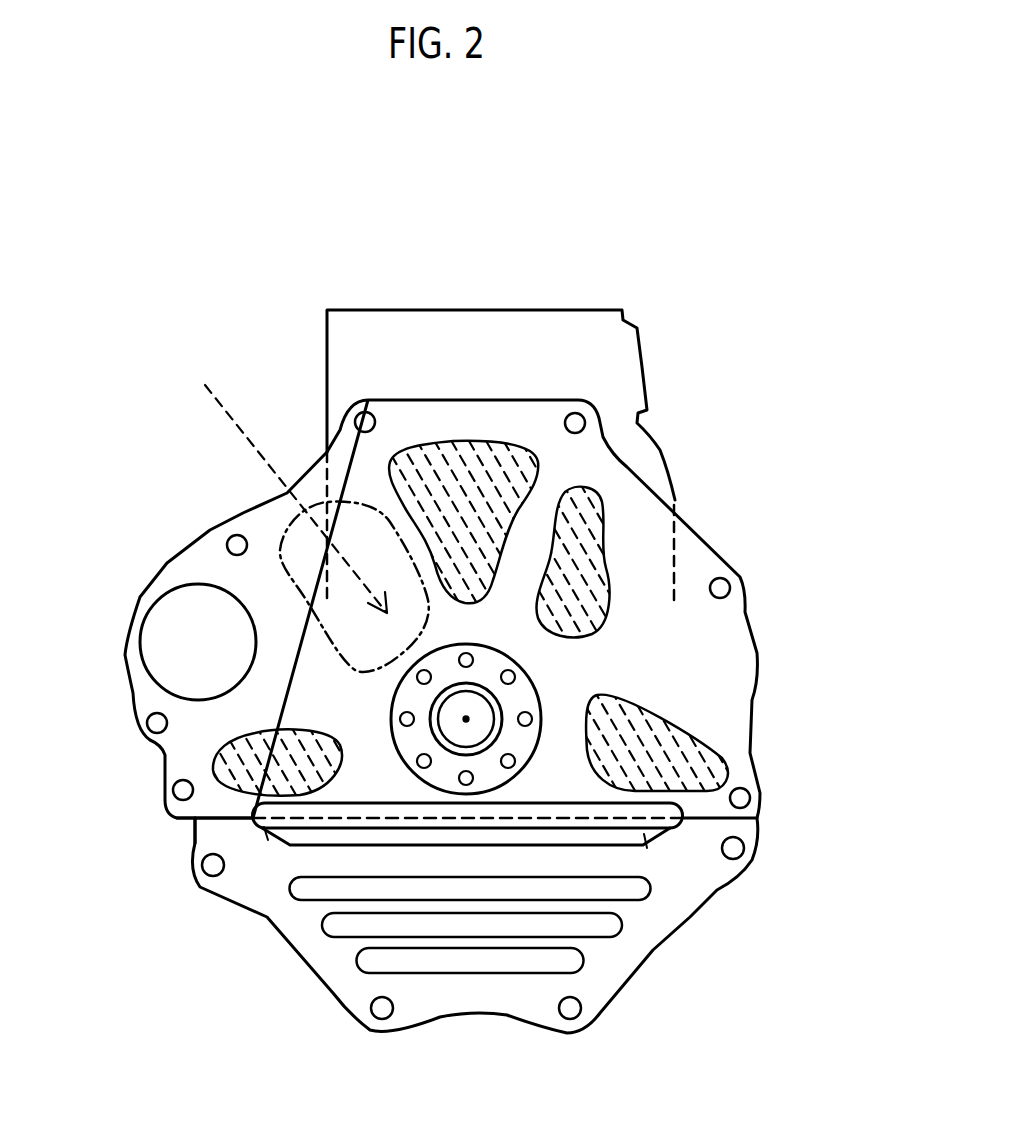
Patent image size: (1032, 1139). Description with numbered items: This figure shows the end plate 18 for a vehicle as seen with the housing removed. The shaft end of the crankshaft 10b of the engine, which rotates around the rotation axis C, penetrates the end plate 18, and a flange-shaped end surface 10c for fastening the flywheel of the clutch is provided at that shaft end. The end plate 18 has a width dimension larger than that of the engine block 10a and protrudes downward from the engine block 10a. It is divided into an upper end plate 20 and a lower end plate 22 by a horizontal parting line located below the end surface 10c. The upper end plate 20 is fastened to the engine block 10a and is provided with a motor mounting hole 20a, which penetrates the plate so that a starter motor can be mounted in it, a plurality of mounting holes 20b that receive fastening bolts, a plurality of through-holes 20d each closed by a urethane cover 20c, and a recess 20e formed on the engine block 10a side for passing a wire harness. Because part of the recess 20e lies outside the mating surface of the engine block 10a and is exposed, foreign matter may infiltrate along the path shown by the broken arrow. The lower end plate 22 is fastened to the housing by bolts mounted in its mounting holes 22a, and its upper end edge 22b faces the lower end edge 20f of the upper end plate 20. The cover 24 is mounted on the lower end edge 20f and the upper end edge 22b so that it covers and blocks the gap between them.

The engine block 10a is at (615, 383).
The crankshaft 10b is at (540, 697).
The end surface 10c is at (493, 700).
The end plate 18 is at (812, 692).
The upper end plate 20 is at (723, 727).
The motor mounting hole 20a is at (150, 630).
The mounting holes 20b is at (230, 545).
The urethane cover 20c is at (594, 528).
The through-holes 20d is at (600, 566).
The recess 20e is at (300, 508).
The lower end edge 20f is at (227, 820).
The lower end plate 22 is at (627, 963).
The mounting holes 22a is at (218, 875).
The upper end edge 22b is at (177, 810).
The cover 24 is at (645, 833).
The rotation axis C is at (462, 705).